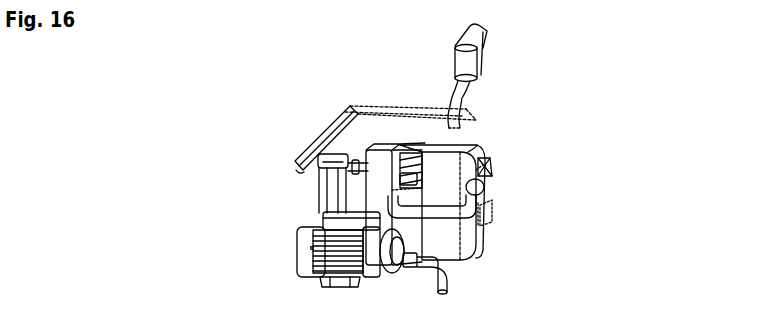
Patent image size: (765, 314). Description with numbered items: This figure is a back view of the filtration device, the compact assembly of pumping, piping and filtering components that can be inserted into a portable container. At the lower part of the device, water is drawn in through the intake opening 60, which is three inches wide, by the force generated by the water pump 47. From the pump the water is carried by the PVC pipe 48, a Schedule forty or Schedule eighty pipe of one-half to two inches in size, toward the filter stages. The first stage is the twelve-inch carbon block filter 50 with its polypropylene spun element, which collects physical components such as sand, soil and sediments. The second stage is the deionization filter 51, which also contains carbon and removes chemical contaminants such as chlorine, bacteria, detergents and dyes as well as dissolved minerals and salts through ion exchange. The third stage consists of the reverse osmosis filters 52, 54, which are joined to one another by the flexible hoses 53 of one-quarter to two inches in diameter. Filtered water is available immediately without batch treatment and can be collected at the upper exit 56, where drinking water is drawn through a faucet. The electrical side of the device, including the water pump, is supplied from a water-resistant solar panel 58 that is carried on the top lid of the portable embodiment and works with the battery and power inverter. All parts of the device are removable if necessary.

The water pump 47 is at (330, 238).
The PVC pipe 48 is at (335, 123).
The carbon block filter 50 is at (470, 168).
The deionization filter 51 is at (383, 151).
The reverse osmosis filter 52 is at (365, 119).
The reverse osmosis filter 54 is at (342, 161).
The flexible hose 53 is at (352, 170).
The upper exit 56 is at (483, 52).
The solar panel 58 is at (480, 160).
The intake opening 60 is at (448, 277).